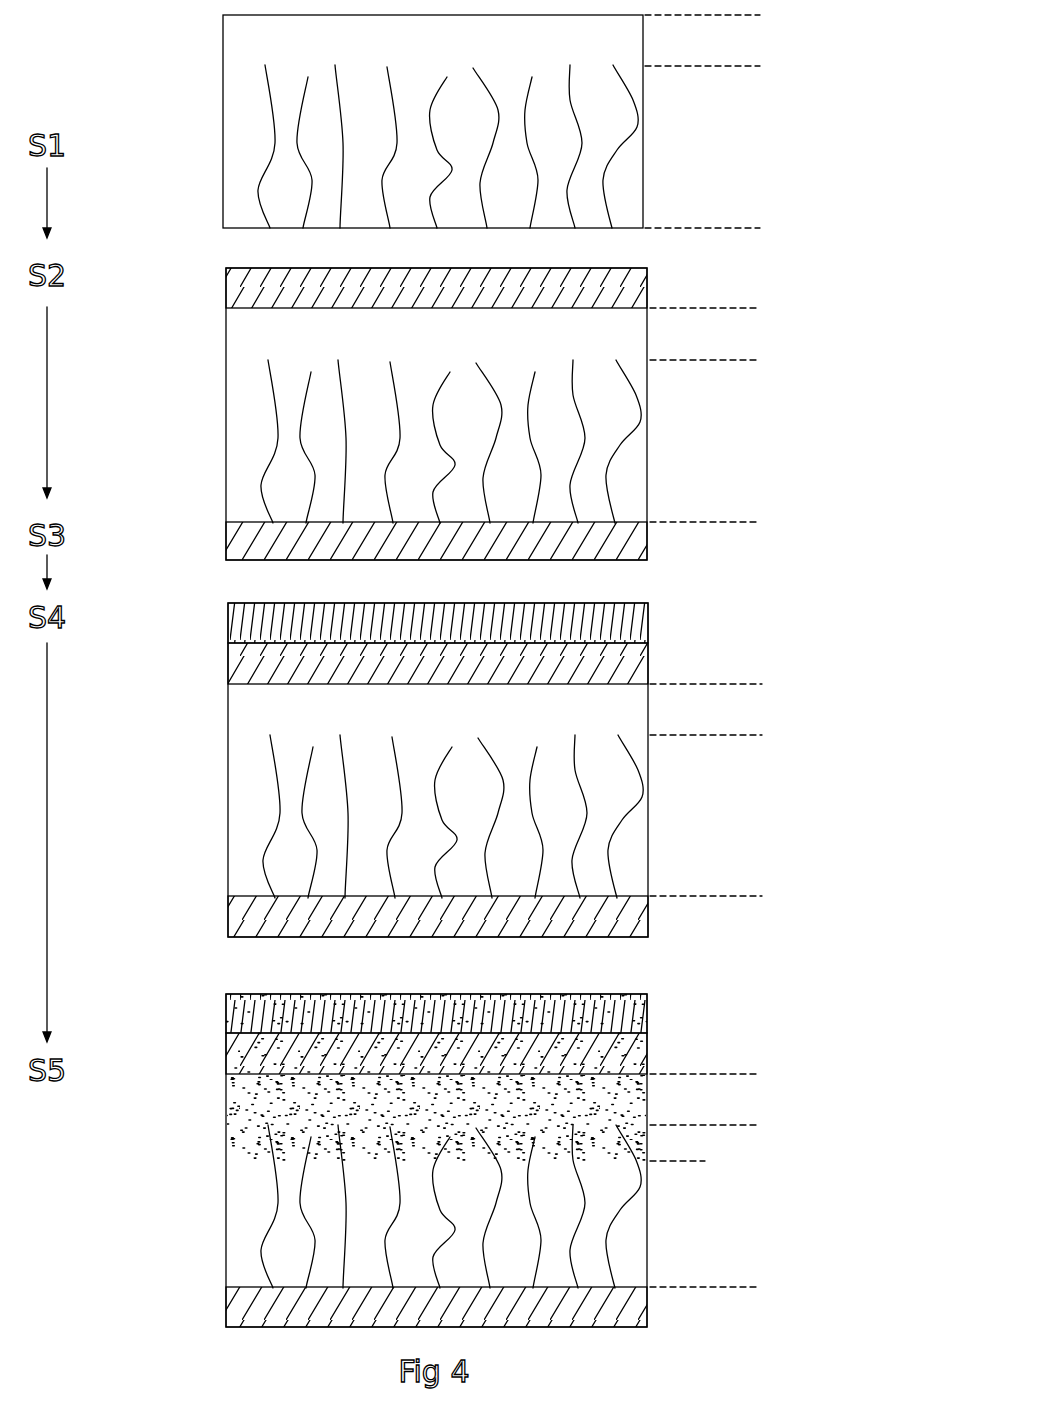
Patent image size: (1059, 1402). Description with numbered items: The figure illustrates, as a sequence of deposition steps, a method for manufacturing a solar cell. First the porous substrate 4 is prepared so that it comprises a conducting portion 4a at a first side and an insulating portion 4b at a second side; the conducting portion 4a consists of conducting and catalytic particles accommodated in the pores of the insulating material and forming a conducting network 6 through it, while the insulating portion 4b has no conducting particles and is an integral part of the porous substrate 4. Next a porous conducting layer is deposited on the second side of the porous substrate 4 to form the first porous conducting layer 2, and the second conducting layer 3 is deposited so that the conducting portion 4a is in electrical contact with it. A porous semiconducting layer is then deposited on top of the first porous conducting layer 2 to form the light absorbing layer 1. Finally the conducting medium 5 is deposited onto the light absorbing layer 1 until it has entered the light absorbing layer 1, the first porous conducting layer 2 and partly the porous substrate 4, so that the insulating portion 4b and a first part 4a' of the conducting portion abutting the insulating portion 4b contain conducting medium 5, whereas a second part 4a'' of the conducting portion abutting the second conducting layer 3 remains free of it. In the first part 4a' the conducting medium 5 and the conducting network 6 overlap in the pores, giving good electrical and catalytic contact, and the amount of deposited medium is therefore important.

The light absorbing layer 1 is at (218, 623).
The first porous conducting layer 2 is at (216, 288).
The second conducting layer 3 is at (216, 540).
The porous substrate 4 is at (213, 125).
The conducting portion 4a is at (721, 676).
The insulating portion 4b is at (727, 24).
The first part of the conducting portion 4a' is at (690, 1143).
The second part of the conducting portion 4a'' is at (697, 1224).
The conducting medium 5 is at (238, 1090).
The conducting network 6 is at (294, 819).